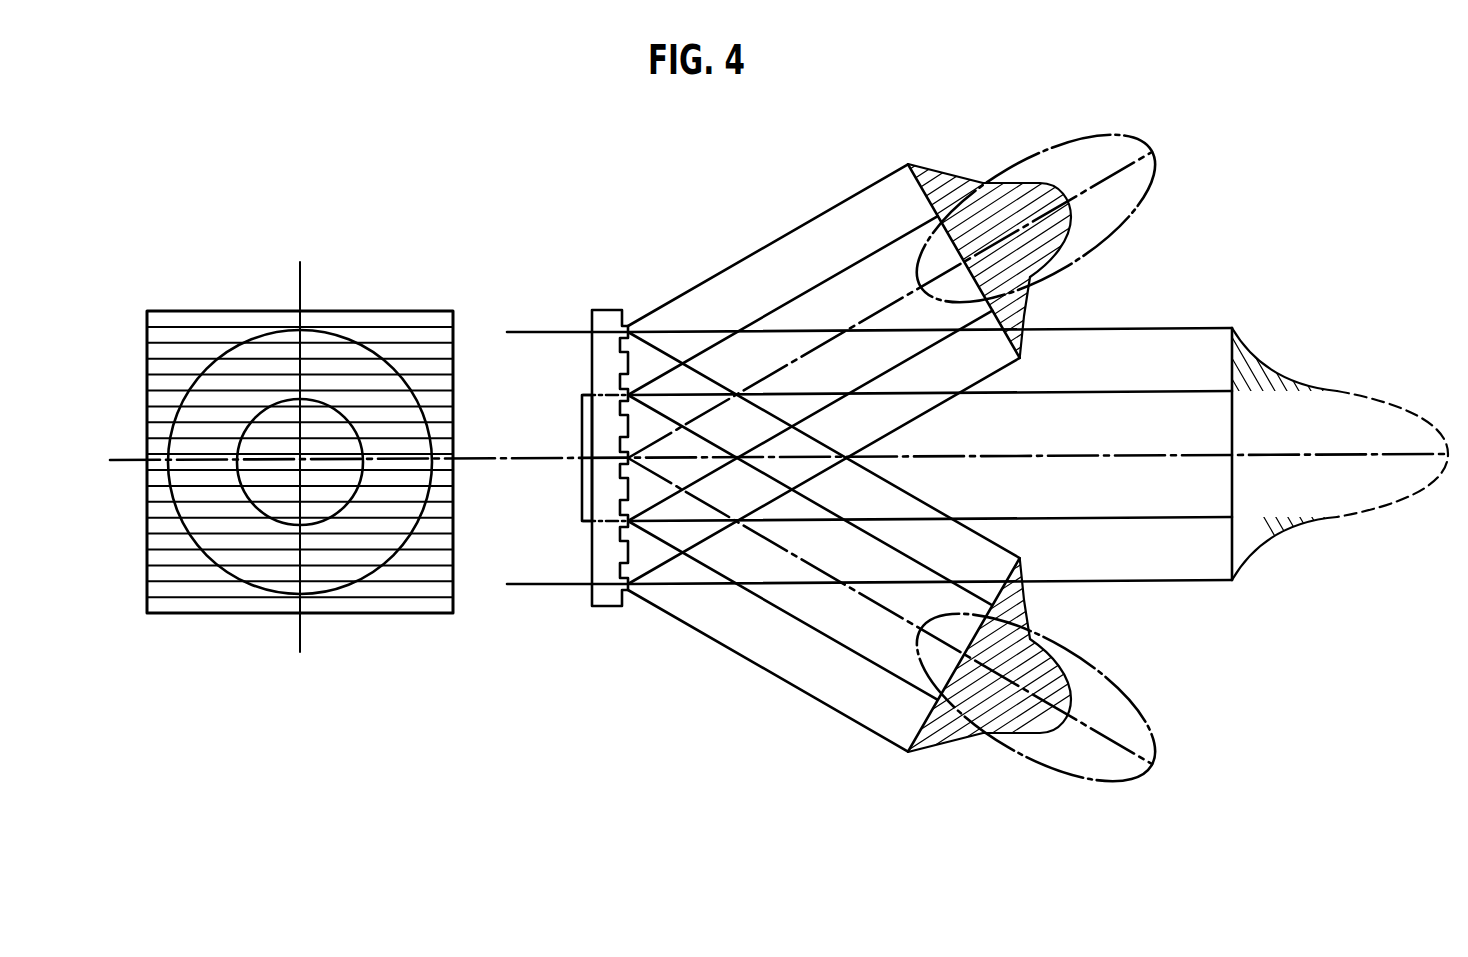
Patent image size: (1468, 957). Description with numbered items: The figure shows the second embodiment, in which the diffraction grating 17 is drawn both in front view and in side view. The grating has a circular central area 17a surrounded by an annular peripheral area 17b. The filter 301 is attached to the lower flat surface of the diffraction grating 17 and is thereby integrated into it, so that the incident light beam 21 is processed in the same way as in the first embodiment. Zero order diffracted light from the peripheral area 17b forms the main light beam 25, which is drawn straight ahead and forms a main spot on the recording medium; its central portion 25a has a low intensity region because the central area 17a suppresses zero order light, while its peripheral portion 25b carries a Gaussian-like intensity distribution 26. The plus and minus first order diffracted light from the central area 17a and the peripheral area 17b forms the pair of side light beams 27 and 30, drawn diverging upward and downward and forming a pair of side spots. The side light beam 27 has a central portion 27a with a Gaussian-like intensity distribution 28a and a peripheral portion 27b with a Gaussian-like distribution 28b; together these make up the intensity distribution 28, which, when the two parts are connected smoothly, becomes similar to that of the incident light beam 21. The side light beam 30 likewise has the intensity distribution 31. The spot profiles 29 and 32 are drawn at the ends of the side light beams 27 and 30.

The diffraction grating 17 is at (355, 283).
The central area 17a is at (277, 508).
The peripheral area 17b is at (397, 583).
The incident light beam 21 is at (237, 343).
The main light beam 25 is at (934, 461).
The central portion 25a is at (1202, 487).
The peripheral portion 25b is at (1157, 345).
The intensity distribution 26 is at (1353, 365).
The side light beam 27 is at (890, 349).
The central portion 27a is at (900, 255).
The peripheral portion 27b is at (838, 418).
The intensity distribution 28 is at (1048, 240).
The Gaussian-like intensity distribution 28a is at (1070, 234).
The Gaussian-like distribution 28b is at (955, 176).
The beam spot of first-order beam 29 is at (1175, 150).
The side light beam 30 is at (850, 747).
The intensity distribution 31 is at (945, 733).
The beam spot of minus-first-order beam 32 is at (1178, 760).
The filter 301 is at (581, 420).